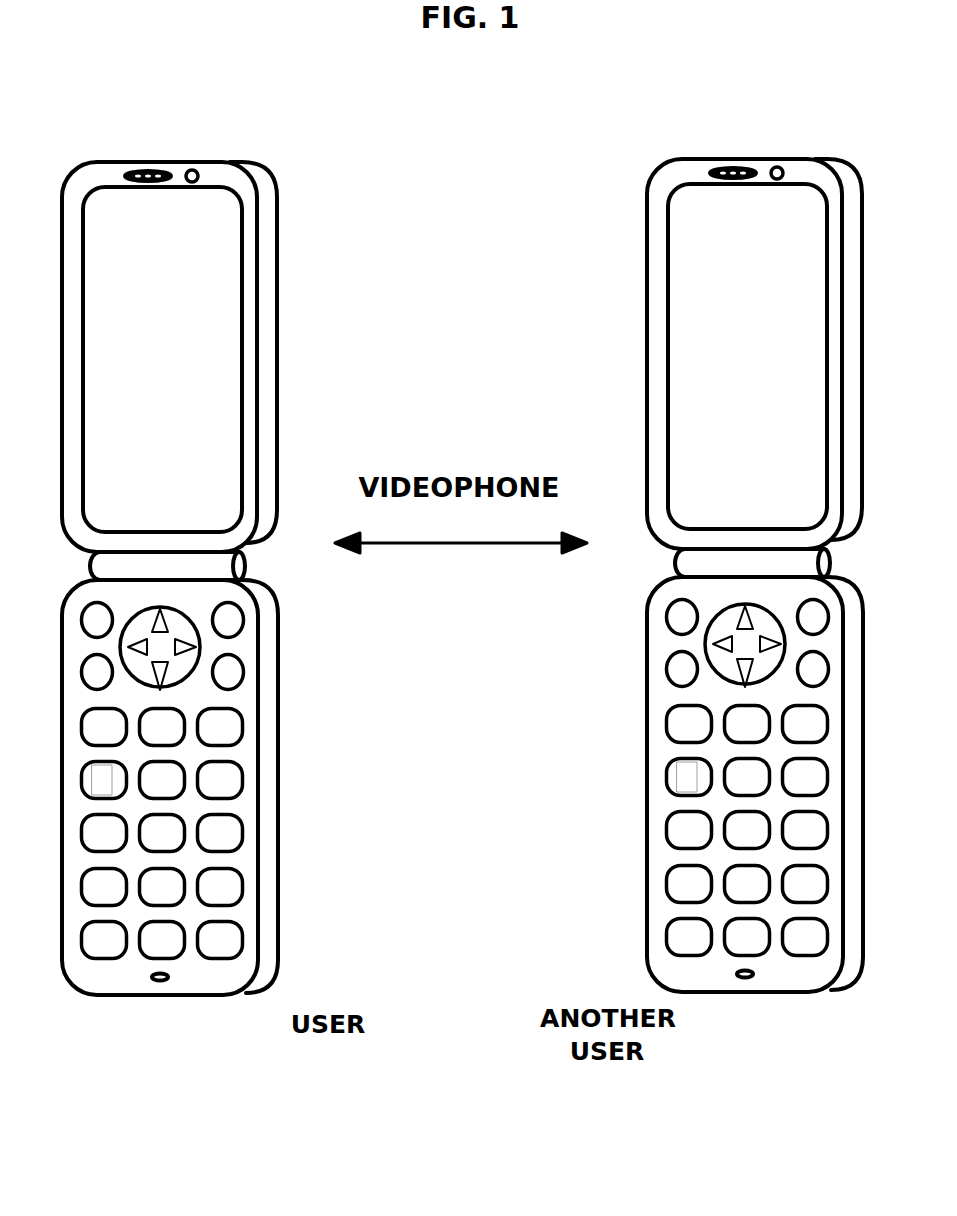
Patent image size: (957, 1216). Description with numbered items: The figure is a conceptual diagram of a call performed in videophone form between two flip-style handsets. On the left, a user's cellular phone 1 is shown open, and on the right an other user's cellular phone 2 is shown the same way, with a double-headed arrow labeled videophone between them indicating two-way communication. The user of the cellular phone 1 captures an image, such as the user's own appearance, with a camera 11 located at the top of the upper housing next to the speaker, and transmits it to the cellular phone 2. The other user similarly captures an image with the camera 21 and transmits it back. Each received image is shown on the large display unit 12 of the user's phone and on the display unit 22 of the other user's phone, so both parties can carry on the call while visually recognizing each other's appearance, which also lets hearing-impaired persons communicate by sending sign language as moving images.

The cellular phone 1 is at (202, 985).
The cellular phone 2 is at (715, 985).
The camera 11 is at (193, 169).
The display unit 12 is at (232, 242).
The camera 21 is at (735, 134).
The display unit 22 is at (694, 356).